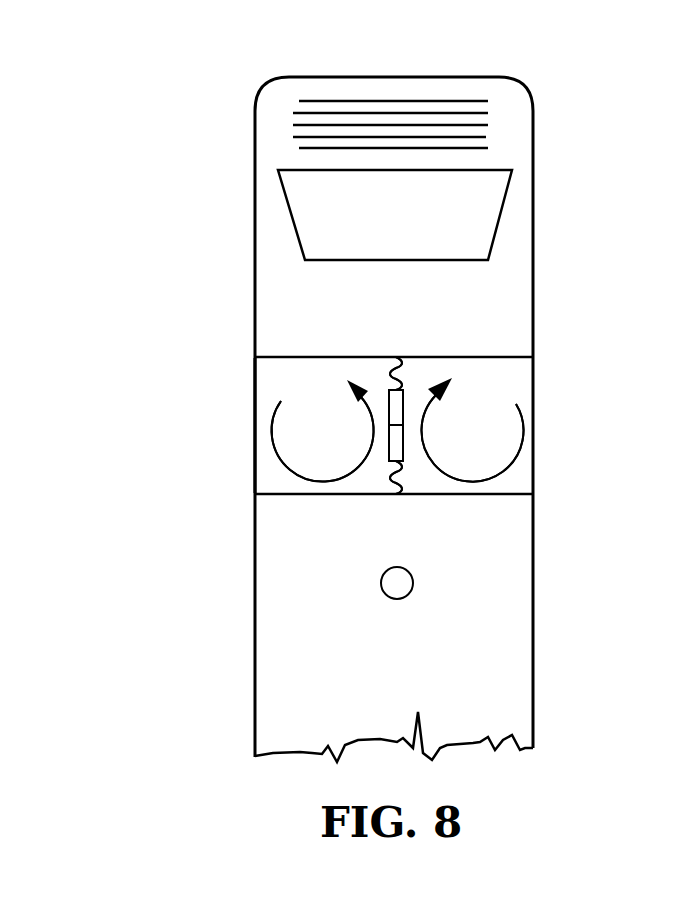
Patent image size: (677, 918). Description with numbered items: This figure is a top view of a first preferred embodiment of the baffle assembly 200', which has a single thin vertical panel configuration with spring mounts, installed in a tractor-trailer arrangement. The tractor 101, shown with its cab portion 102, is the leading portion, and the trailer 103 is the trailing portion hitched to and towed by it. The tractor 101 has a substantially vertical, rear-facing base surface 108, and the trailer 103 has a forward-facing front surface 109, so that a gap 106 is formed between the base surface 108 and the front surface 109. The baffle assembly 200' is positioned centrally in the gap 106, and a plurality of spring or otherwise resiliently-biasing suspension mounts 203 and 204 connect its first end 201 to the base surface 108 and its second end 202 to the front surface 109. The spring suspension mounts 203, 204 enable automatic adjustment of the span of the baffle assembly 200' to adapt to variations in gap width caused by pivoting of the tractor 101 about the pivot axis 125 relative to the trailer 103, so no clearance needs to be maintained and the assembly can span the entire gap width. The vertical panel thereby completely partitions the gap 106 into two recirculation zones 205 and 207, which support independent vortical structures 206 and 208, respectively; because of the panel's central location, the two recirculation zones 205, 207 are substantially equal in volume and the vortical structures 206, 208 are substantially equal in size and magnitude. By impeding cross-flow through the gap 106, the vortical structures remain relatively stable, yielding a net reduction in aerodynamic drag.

The tractor 101 is at (460, 77).
The cab portion 102 is at (422, 302).
The trailer 103 is at (393, 705).
The gap 106 is at (272, 378).
The base surface 108 is at (528, 357).
The front surface 109 is at (523, 494).
The pivot axis 125 is at (410, 593).
The baffle assembly 200' is at (506, 456).
The first end 201 is at (388, 390).
The second end 202 is at (389, 458).
The spring suspension mount 203 is at (398, 371).
The spring suspension mount 204 is at (400, 487).
The recirculation zone 205 is at (498, 438).
The vortical structure 206 is at (523, 423).
The recirculation zone 207 is at (348, 438).
The vortical structure 208 is at (275, 440).